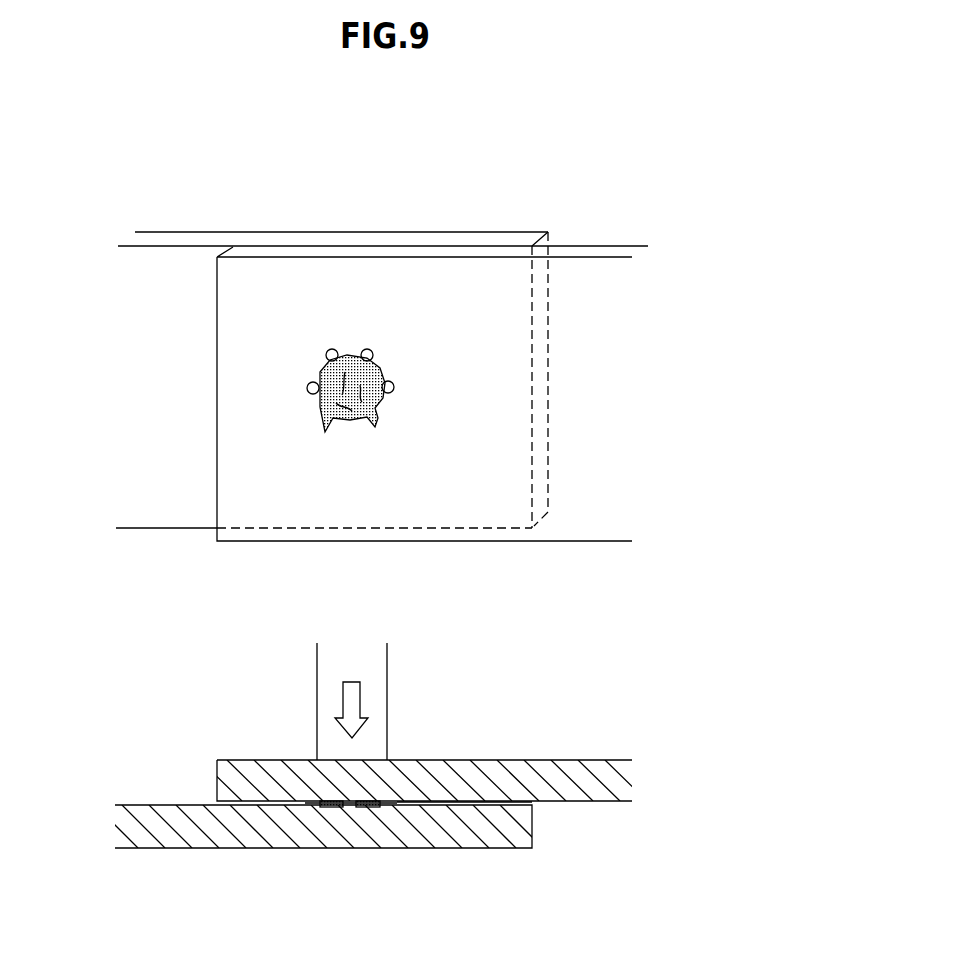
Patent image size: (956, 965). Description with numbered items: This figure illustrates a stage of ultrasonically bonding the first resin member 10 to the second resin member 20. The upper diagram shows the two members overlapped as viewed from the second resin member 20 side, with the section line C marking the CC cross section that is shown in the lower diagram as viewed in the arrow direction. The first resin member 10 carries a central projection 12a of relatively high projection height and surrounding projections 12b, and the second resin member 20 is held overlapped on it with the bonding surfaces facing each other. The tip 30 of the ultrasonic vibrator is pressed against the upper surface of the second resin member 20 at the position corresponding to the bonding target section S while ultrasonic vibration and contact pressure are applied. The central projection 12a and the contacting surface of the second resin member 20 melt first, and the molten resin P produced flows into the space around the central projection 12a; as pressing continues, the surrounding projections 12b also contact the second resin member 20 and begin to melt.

The first resin member 10 is at (171, 244).
The second resin member 20 is at (580, 255).
The tip 30 is at (382, 408).
The central projection 12a is at (347, 380).
The surrounding projections 12b is at (327, 357).
The bonding target section S is at (310, 390).
The molten resin P is at (320, 410).
The CC cross section C is at (718, 388).